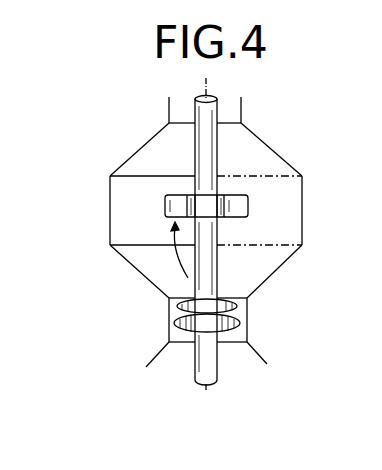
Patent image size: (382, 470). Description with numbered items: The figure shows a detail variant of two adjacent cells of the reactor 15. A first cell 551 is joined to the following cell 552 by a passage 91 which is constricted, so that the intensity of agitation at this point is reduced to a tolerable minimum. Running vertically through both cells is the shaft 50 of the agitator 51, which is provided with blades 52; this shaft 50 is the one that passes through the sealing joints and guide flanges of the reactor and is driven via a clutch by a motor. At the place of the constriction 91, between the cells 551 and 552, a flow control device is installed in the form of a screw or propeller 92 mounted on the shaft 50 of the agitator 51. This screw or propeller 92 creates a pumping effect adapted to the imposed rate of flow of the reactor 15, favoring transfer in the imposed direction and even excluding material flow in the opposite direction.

The reactor 15 is at (124, 281).
The shaft 50 is at (203, 268).
The agitator 51 is at (192, 137).
The blades 52 is at (247, 203).
The passage 91 is at (173, 325).
The screw or propeller 92 is at (242, 312).
The cell 551 is at (263, 354).
The cell 552 is at (281, 157).